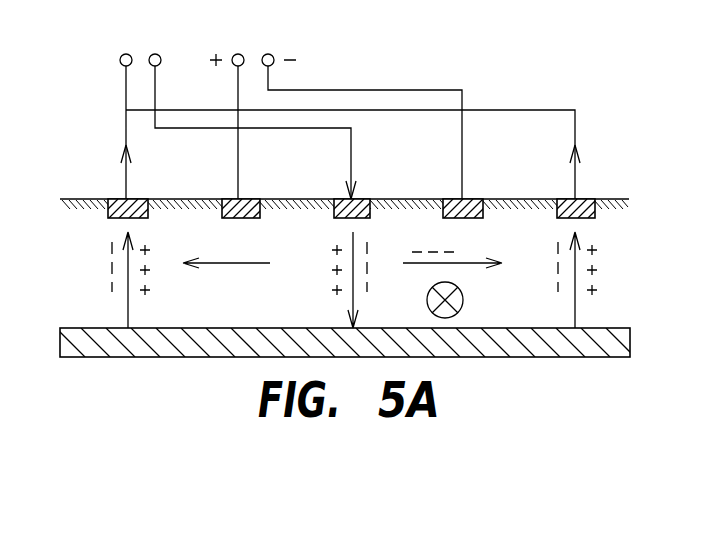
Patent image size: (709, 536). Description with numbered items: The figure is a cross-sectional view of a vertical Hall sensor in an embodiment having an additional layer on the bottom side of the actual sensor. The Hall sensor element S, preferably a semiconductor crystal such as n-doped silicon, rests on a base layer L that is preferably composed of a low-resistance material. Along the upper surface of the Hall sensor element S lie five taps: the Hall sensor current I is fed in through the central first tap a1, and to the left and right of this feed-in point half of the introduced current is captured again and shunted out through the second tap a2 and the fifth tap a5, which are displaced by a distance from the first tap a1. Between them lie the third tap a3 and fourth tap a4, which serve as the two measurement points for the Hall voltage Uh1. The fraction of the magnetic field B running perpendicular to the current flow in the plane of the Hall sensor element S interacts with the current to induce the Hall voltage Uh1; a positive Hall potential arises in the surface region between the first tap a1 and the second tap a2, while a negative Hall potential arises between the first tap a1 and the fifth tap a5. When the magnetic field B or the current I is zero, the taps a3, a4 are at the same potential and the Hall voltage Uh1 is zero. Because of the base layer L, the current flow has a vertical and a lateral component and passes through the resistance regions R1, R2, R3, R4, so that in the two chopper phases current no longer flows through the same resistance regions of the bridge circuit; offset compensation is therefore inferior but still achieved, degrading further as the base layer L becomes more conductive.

The Hall sensor element S is at (100, 199).
The base layer L is at (112, 328).
The magnetic field B is at (456, 300).
The first tap a1 is at (353, 197).
The second tap a2 is at (128, 197).
The third tap a3 is at (242, 197).
The fourth tap a4 is at (463, 197).
The fifth tap a5 is at (577, 197).
The resistance region R1 is at (219, 246).
The resistance region R2 is at (290, 234).
The resistance region R3 is at (450, 246).
The resistance region R4 is at (518, 234).
The Hall sensor current I is at (342, 116).
The Hall voltage Uh1 is at (336, 116).